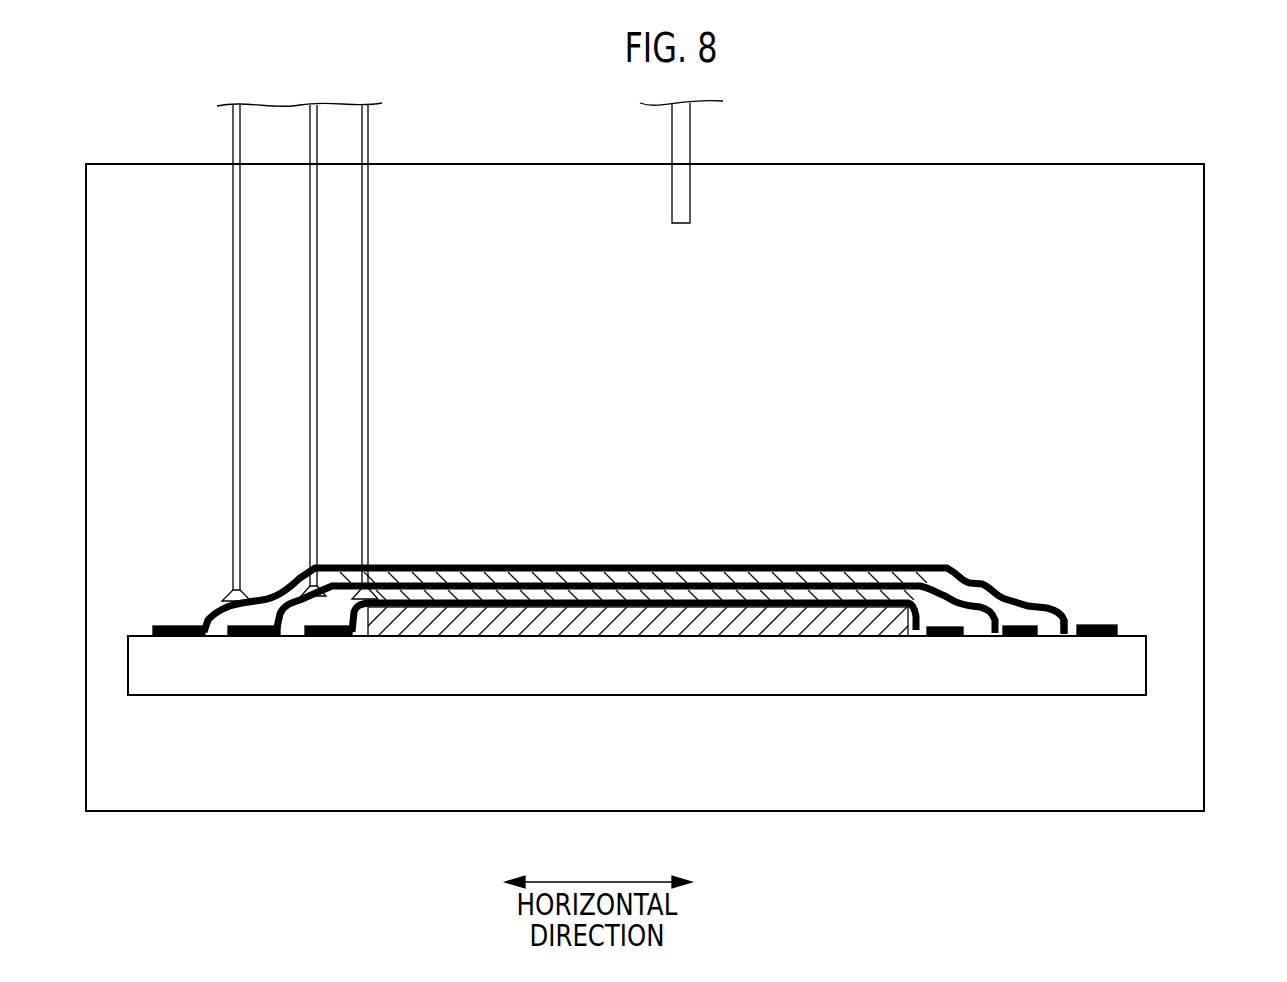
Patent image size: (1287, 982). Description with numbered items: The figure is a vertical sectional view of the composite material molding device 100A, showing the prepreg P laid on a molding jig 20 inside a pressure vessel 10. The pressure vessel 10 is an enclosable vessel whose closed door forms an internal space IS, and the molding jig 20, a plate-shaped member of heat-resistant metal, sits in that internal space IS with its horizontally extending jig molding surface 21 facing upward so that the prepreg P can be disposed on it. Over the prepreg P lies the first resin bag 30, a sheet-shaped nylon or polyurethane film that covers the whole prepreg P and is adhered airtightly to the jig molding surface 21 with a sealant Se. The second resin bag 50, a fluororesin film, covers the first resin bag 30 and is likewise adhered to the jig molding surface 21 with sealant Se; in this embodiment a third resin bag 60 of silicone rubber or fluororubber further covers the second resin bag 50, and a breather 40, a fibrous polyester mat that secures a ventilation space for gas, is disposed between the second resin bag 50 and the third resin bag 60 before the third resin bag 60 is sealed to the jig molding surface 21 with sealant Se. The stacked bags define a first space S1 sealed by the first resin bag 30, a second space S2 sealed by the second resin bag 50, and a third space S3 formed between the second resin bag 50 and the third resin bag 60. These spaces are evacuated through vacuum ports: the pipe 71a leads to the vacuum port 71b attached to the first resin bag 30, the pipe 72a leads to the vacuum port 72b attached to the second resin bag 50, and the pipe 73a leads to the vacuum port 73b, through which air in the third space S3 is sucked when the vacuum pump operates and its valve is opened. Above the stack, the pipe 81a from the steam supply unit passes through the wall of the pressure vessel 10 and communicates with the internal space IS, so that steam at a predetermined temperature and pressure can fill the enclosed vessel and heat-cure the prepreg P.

The composite material molding device 100A is at (1150, 133).
The pressure vessel 10 is at (1090, 812).
The molding jig 20 is at (1030, 695).
The jig molding surface 21 is at (1070, 626).
The first resin bag 30 is at (878, 605).
The breather 40 is at (674, 575).
The second resin bag 50 is at (767, 585).
The third resin bag 60 is at (722, 565).
The prepreg P is at (627, 612).
The sealant Se is at (1022, 628).
The first space S1 is at (358, 658).
The second space S2 is at (278, 658).
The third space S3 is at (200, 658).
The internal space IS is at (1012, 322).
The pipe 71a is at (368, 264).
The pipe 72a is at (310, 268).
The pipe 73a is at (233, 210).
The pipe 81a is at (690, 203).
The vacuum port 71b is at (373, 599).
The vacuum port 72b is at (307, 597).
The vacuum port 73b is at (232, 600).